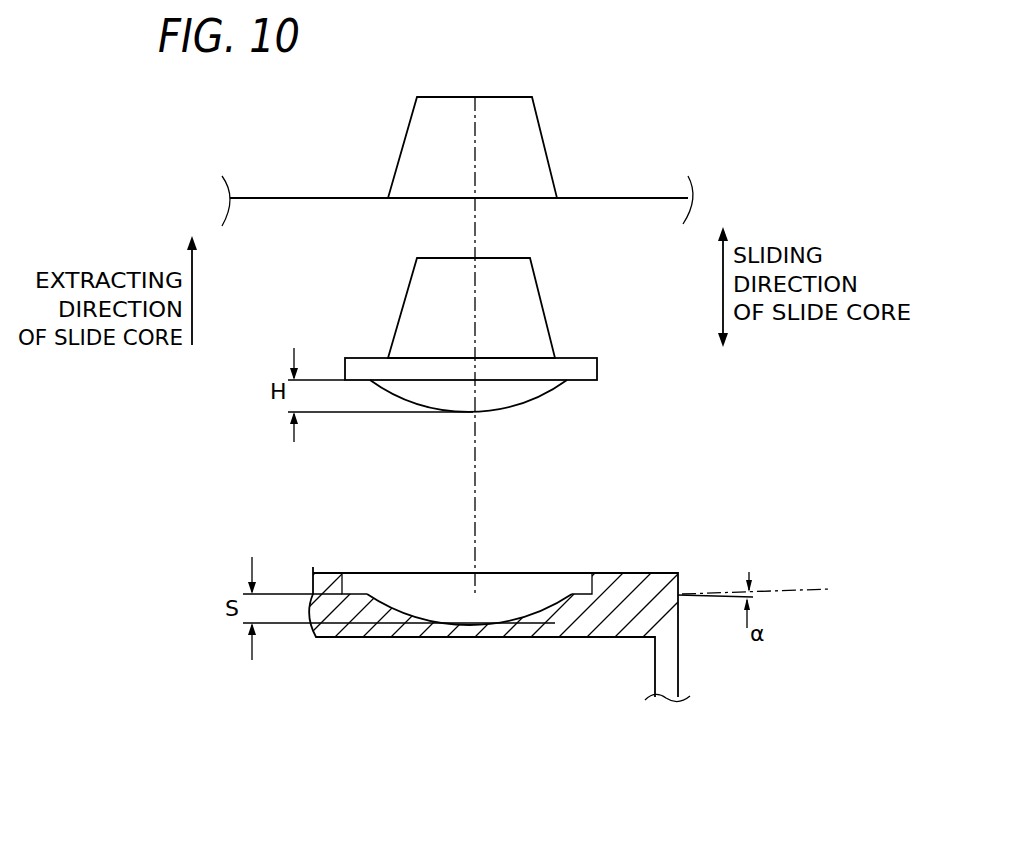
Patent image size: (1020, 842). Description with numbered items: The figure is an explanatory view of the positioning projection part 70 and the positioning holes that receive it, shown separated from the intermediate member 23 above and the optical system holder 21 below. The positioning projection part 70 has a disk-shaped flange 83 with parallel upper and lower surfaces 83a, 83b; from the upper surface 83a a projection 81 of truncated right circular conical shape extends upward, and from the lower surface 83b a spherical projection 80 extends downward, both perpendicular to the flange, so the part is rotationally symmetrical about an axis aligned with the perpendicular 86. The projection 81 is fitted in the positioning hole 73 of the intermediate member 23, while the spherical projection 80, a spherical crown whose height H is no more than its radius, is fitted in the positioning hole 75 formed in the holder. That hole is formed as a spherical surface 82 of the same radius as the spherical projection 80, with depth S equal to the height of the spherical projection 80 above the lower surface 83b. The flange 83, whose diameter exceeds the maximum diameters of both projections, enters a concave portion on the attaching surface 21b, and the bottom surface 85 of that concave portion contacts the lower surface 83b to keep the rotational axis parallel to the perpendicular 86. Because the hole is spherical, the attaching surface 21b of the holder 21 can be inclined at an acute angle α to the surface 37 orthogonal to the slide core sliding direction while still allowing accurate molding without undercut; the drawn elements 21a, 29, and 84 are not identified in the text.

The optical system holder 21 is at (309, 640).
The side wall of fixed mold 21a is at (680, 643).
The attaching surface 21b is at (628, 582).
The intermediate member 23 is at (287, 200).
The parting surface 29 is at (590, 200).
The surface orthogonal to the sliding direction of the slide core 37 is at (790, 592).
The positioning projection part 70 is at (484, 357).
The positioning hole 73 is at (507, 193).
The positioning hole 75 is at (430, 590).
The spherical projection 80 is at (530, 398).
The projection 81 is at (532, 278).
The spherical surface 82 is at (500, 600).
The flange 83 is at (598, 367).
The upper surface of the flange 83a is at (575, 358).
The lower surface of the flange 83b is at (580, 383).
The step portion 84 is at (585, 587).
The bottom surface of the concave portion 85 is at (353, 594).
The perpendicular to the attaching surface 86 is at (475, 145).